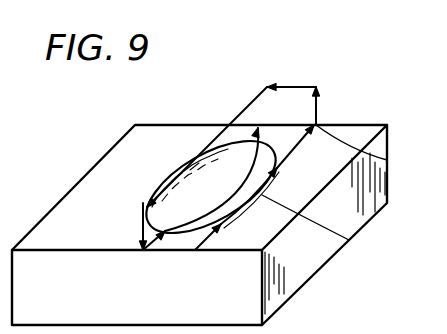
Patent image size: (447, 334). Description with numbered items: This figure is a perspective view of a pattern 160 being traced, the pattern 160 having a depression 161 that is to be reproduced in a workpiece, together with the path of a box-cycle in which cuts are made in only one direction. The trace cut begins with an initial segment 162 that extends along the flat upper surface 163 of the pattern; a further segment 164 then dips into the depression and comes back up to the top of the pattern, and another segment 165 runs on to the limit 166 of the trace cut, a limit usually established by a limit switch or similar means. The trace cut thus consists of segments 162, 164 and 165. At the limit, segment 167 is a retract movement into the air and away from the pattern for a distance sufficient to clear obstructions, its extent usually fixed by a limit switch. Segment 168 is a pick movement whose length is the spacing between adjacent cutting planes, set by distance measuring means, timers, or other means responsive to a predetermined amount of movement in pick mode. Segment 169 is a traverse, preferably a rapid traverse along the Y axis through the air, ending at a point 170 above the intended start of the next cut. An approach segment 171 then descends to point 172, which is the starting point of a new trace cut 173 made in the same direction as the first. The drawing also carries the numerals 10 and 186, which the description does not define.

The light beam 10 is at (352, 87).
The pattern 160 is at (374, 214).
The depression 161 is at (212, 195).
The initial segment 162 is at (219, 229).
The flat upper surface 163 is at (274, 199).
The segment 164 is at (346, 239).
The segment 165 is at (292, 146).
The limit 166 is at (388, 143).
The segment 167 is at (318, 108).
The segment 168 is at (276, 84).
The segment 169 is at (242, 108).
The point 170 is at (146, 204).
The approach segment 171 is at (142, 218).
The point 172 is at (140, 252).
The new trace cut 173 is at (165, 236).
The top surface 186 is at (158, 159).